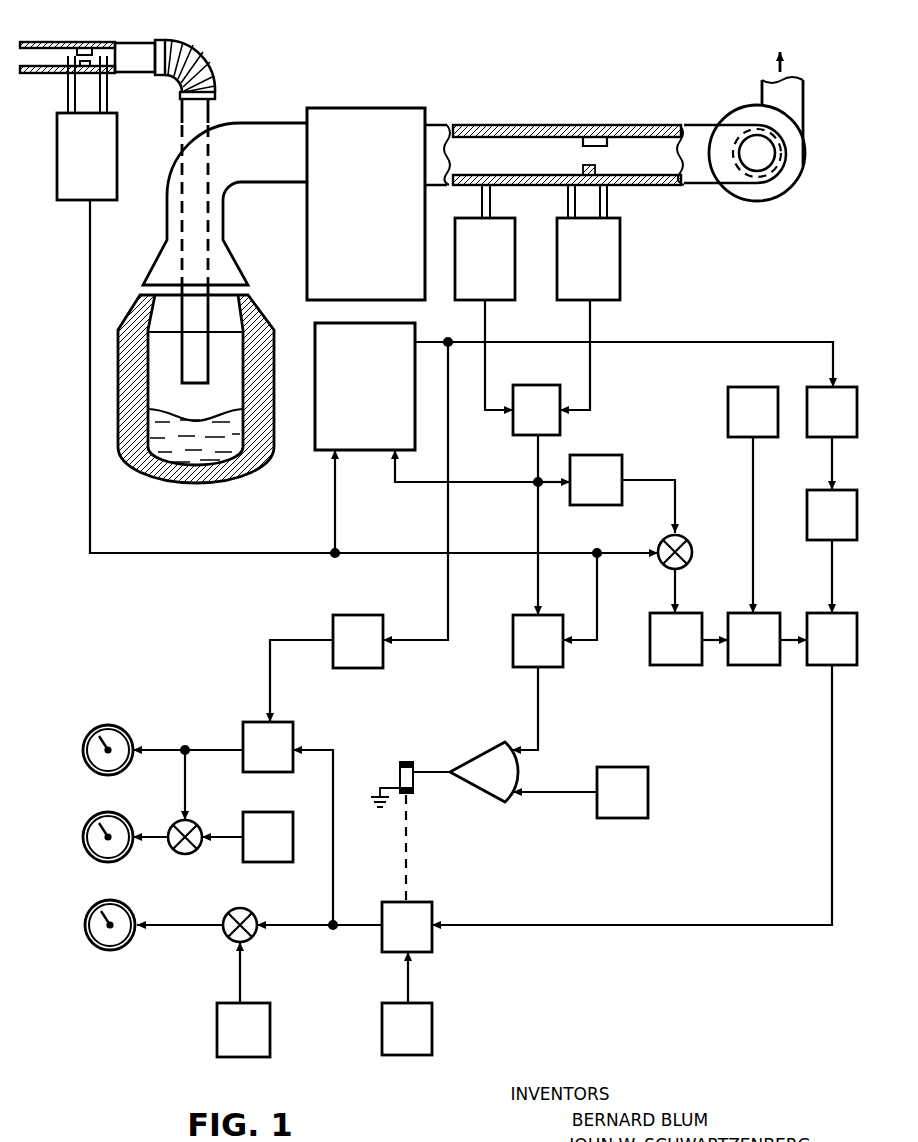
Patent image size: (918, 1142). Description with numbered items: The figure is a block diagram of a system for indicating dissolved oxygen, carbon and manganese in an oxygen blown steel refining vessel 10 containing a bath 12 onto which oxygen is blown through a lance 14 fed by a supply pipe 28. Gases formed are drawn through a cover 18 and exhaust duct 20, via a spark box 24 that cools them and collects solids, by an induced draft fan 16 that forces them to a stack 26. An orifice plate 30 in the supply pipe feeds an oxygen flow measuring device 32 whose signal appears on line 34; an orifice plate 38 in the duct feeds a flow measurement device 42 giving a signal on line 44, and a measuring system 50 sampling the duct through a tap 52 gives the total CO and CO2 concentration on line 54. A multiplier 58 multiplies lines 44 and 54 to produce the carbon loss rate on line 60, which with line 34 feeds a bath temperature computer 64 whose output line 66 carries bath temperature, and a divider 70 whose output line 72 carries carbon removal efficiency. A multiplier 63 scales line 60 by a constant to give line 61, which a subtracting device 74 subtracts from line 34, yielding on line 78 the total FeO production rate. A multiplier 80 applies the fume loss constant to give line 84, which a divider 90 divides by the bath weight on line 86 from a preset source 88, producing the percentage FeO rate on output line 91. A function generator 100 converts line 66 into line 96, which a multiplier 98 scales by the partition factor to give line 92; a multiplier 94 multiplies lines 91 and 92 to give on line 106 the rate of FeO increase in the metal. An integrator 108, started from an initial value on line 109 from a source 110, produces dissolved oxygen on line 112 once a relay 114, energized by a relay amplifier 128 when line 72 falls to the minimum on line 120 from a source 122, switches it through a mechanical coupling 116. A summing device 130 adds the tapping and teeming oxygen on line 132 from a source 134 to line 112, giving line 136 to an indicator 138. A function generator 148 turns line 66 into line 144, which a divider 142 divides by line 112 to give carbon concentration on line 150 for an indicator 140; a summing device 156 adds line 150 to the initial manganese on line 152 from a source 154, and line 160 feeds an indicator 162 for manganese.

The steel refining vessel 10 is at (180, 484).
The bath 12 is at (232, 455).
The lance 14 is at (212, 343).
The induced draft fan 16 is at (802, 176).
The cover 18 is at (237, 263).
The exhaust duct 20 is at (494, 125).
The spark box 24 is at (357, 108).
The stack 26 is at (803, 104).
The supply pipe 28 is at (107, 43).
The orifice plate 30 is at (77, 43).
The oxygen flow measuring device 32 is at (57, 179).
The line 34 is at (90, 242).
The orifice plate 38 is at (607, 125).
The flow measurement device 42 is at (621, 234).
The line 44 is at (591, 325).
The measuring system 50 is at (516, 221).
The tap 52 is at (481, 202).
The line 54 is at (486, 325).
The multiplier 58 is at (541, 385).
The line 60 is at (542, 458).
The line 61 is at (676, 484).
The multiplier 63 is at (622, 461).
The bath temperature computer 64 is at (325, 452).
The output line 66 is at (672, 342).
The divider 70 is at (520, 668).
The output line 72 is at (540, 734).
The subtracting device 74 is at (693, 550).
The line 78 is at (678, 585).
The multiplier 80 is at (670, 666).
The line 84 is at (711, 645).
The line 86 is at (752, 460).
The source 88 is at (727, 404).
The divider 90 is at (753, 666).
The output line 91 is at (794, 645).
The line 92 is at (830, 565).
The multiplier 94 is at (845, 666).
The line 96 is at (830, 460).
The multiplier 98 is at (806, 512).
The function generator 100 is at (812, 386).
The line 106 is at (766, 922).
The integrator 108 is at (433, 903).
The line 109 is at (411, 980).
The source 110 is at (381, 1034).
The line 112 is at (357, 931).
The relay 114 is at (405, 758).
The mechanical coupling 116 is at (408, 850).
The line 120 is at (556, 795).
The source 122 is at (649, 802).
The relay amplifier 128 is at (480, 758).
The summing device 130 is at (226, 938).
The line 132 is at (243, 980).
The source 134 is at (216, 1036).
The line 136 is at (185, 931).
The indicator 138 is at (135, 944).
The indicator 140 is at (112, 727).
The divider 142 is at (252, 720).
The line 144 is at (285, 639).
The function generator 148 is at (362, 615).
The line 150 is at (206, 748).
The line 152 is at (222, 840).
The source 154 is at (293, 812).
The summing device 156 is at (177, 853).
The line 160 is at (158, 830).
The indicator 162 is at (113, 814).